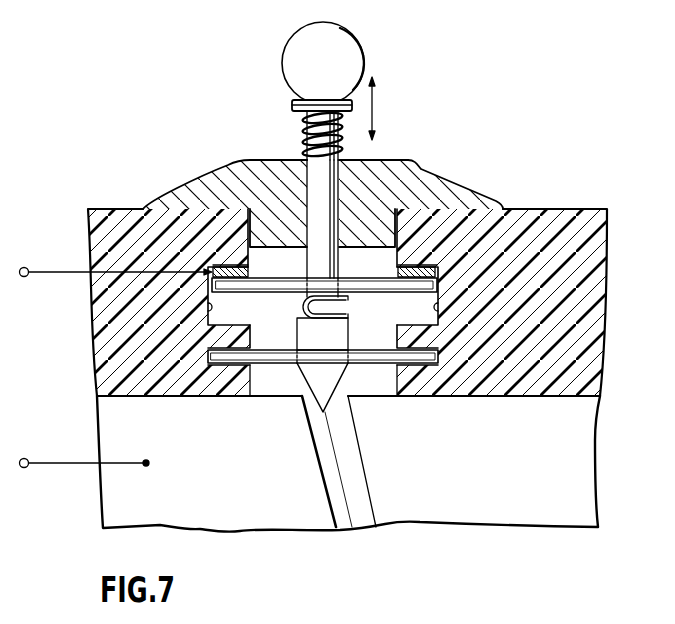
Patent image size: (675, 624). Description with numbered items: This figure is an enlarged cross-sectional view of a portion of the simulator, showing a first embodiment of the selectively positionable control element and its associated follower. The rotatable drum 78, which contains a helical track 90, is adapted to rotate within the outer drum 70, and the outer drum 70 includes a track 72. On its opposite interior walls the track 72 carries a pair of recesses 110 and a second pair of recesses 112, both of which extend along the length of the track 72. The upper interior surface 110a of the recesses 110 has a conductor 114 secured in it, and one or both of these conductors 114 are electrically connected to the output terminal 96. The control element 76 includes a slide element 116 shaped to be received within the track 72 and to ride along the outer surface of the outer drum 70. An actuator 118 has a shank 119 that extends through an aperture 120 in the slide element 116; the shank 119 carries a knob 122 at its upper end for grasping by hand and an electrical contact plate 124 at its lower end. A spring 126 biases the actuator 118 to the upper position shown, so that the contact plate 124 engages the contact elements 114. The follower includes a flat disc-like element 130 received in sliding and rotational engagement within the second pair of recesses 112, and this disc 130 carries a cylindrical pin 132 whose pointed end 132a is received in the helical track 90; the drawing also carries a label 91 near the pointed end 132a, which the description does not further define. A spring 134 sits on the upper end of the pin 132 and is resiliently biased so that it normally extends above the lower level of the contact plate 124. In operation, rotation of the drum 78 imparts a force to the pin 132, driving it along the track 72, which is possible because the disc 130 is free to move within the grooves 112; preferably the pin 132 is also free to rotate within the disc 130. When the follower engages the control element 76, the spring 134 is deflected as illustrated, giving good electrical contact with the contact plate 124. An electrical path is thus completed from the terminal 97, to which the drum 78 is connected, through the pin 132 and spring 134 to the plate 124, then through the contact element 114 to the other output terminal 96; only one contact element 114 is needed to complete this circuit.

The outer drum 70 is at (563, 209).
The track 72 is at (403, 249).
The control element 76 is at (463, 101).
The rotatable drum 78 is at (466, 465).
The helical track 90 is at (335, 476).
The valve seat 91 is at (294, 386).
The output terminal 96 is at (27, 267).
The terminal 97 is at (29, 468).
The recesses 110 is at (438, 307).
The upper interior surface 110a is at (440, 262).
The second pair of recesses 112 is at (438, 357).
The conductor 114 is at (397, 270).
The slide element 116 is at (440, 178).
The actuator 118 is at (278, 114).
The shank 119 is at (302, 143).
The aperture 120 is at (338, 175).
The knob 122 is at (357, 47).
The electrical contact plate 124 is at (384, 287).
The spring 126 is at (317, 148).
The flat disc-like element 130 is at (272, 353).
The cylindrical pin 132 is at (332, 341).
The pointed end 132a is at (338, 407).
The spring 134 is at (299, 307).